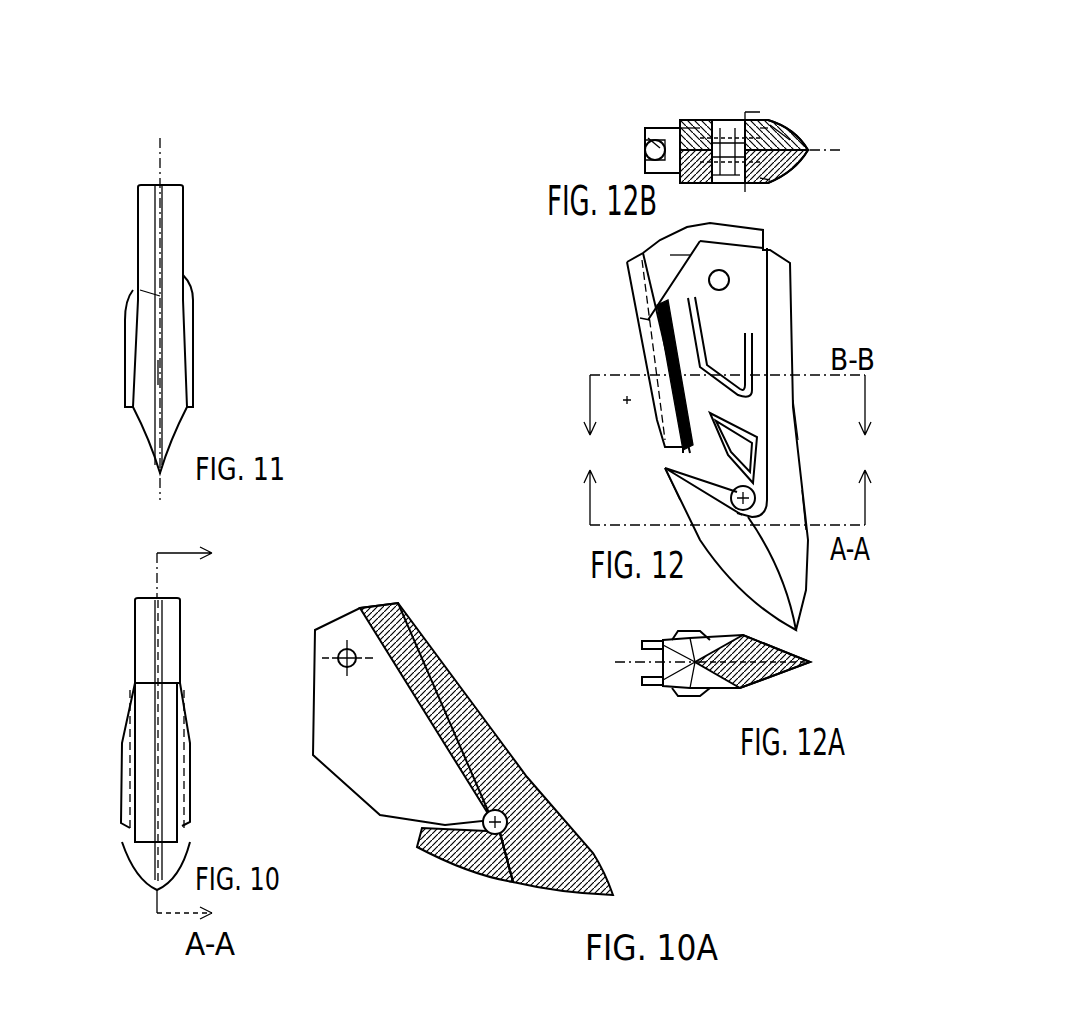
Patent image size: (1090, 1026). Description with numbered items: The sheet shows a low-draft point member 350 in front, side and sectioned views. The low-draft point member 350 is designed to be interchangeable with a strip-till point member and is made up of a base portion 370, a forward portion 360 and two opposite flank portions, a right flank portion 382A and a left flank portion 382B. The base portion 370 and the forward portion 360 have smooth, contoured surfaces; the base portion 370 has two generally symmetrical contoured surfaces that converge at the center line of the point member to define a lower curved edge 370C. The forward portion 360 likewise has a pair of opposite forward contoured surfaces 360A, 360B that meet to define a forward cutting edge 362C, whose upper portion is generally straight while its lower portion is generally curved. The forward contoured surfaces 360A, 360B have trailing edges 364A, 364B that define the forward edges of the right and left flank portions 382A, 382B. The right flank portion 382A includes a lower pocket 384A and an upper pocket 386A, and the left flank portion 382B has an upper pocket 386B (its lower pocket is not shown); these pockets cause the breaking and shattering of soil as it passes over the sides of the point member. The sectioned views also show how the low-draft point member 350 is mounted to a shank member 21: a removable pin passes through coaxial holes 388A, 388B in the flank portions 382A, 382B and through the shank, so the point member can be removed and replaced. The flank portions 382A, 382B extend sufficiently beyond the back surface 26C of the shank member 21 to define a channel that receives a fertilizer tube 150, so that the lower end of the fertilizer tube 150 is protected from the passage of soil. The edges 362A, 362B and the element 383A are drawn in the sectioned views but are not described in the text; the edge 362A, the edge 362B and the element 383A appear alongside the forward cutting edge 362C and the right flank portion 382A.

In FIG. 12B, the shank member 21 is at (717, 166).
In FIG. 12, the shank member 21 is at (680, 247).
In FIG. 12B, the back surface 26C is at (650, 142).
In FIG. 12B, the fertilizer tube 150 is at (645, 140).
In FIG. 12, the fertilizer tube 150 is at (640, 318).
In FIG. 11, the low-draft point member 350 is at (213, 179).
In FIG. 10, the low-draft point member 350 is at (198, 660).
In FIG. 10A, the low-draft point member 350 is at (468, 652).
In FIG. 12, the low-draft point member 350 is at (806, 320).
In FIG. 12, the forward portion 360 is at (797, 475).
In FIG. 11, the forward contoured surface 360A is at (147, 296).
In FIG. 12B, the forward contoured surface 360A is at (790, 170).
In FIG. 12, the forward contoured surface 360A is at (780, 506).
In FIG. 11, the forward contoured surface 360B is at (183, 318).
In FIG. 12B, the forward contoured surface 360B is at (790, 145).
In FIG. 12A, the first blade edge 362A is at (775, 684).
In FIG. 12A, the second blade edge 362B is at (785, 654).
In FIG. 11, the forward cutting edge 362C is at (160, 374).
In FIG. 10A, the forward cutting edge 362C is at (503, 748).
In FIG. 12B, the forward cutting edge 362C is at (808, 155).
In FIG. 12, the forward cutting edge 362C is at (793, 418).
In FIG. 12A, the forward cutting edge 362C is at (812, 664).
In FIG. 11, the trailing edge 364A is at (127, 322).
In FIG. 12B, the trailing edge 364A is at (770, 182).
In FIG. 12, the trailing edge 364A is at (768, 358).
In FIG. 11, the trailing edge 364B is at (186, 255).
In FIG. 12B, the trailing edge 364B is at (768, 128).
In FIG. 12, the base portion 370 is at (742, 572).
In FIG. 10A, the lower curved edge 370C is at (527, 888).
In FIG. 12, the lower curved edge 370C is at (693, 538).
In FIG. 12, the right flank portion 382A is at (640, 337).
In FIG. 10A, the left flank portion 382B is at (412, 763).
In FIG. 12B, the left flank portion 382B is at (678, 122).
In FIG. 12B, the plate edge 383A is at (688, 186).
In FIG. 12, the lower pocket 384A is at (690, 440).
In FIG. 12B, the upper pocket 386A is at (740, 195).
In FIG. 12, the upper pocket 386A is at (717, 340).
In FIG. 12B, the upper pocket 386B is at (690, 116).
In FIG. 12, the hole 388A is at (708, 275).
In FIG. 10A, the hole 388B is at (346, 648).